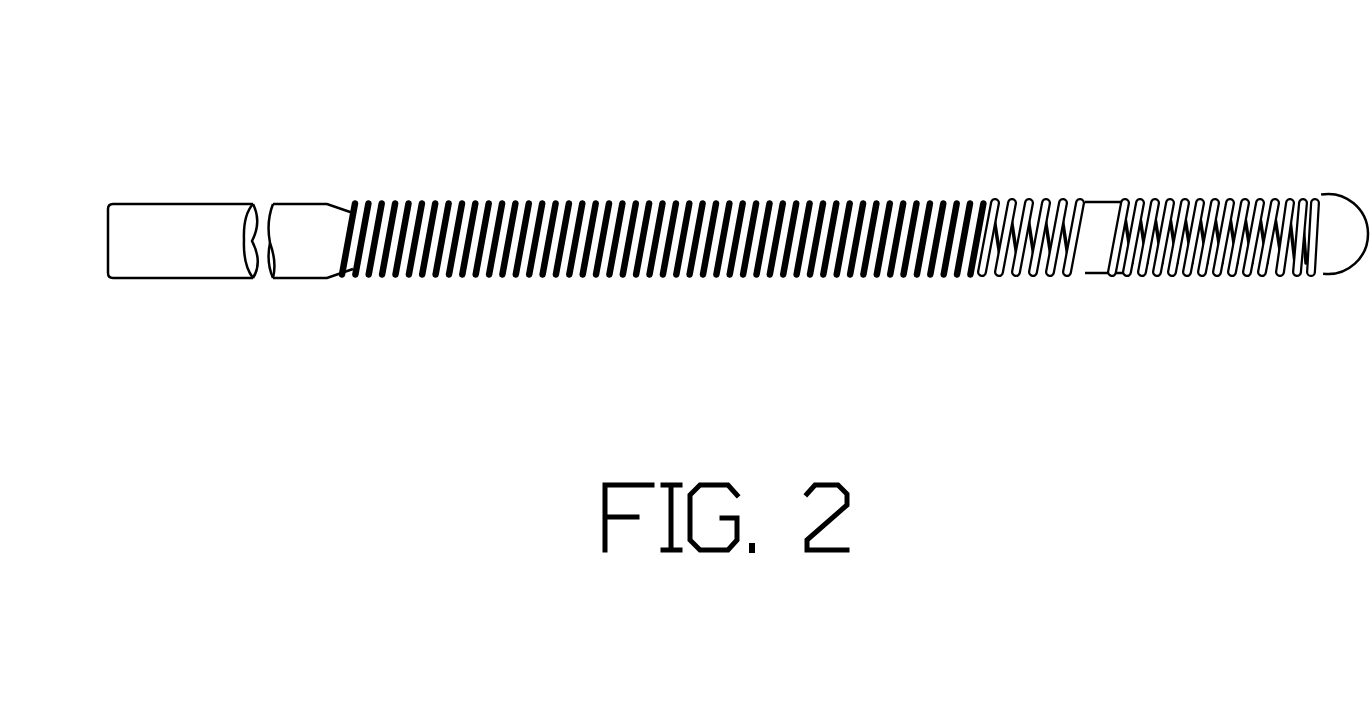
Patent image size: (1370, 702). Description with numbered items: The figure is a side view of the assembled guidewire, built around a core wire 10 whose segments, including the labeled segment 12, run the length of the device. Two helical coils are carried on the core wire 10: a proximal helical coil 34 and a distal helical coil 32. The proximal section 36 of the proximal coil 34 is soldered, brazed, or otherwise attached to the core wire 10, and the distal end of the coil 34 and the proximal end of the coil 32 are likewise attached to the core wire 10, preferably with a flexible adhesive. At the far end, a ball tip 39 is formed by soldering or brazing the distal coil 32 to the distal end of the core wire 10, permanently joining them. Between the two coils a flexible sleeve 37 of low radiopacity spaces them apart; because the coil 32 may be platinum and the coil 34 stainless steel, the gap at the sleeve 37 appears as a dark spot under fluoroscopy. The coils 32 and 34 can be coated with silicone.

The core wire 10 is at (237, 160).
The core wire 12 is at (257, 345).
The distal helical coil 32 is at (1297, 77).
The proximal helical coil 34 is at (687, 93).
The proximal section of proximal coil 36 is at (402, 132).
The sleeve 37 is at (1127, 107).
The ball tip 39 is at (1345, 247).